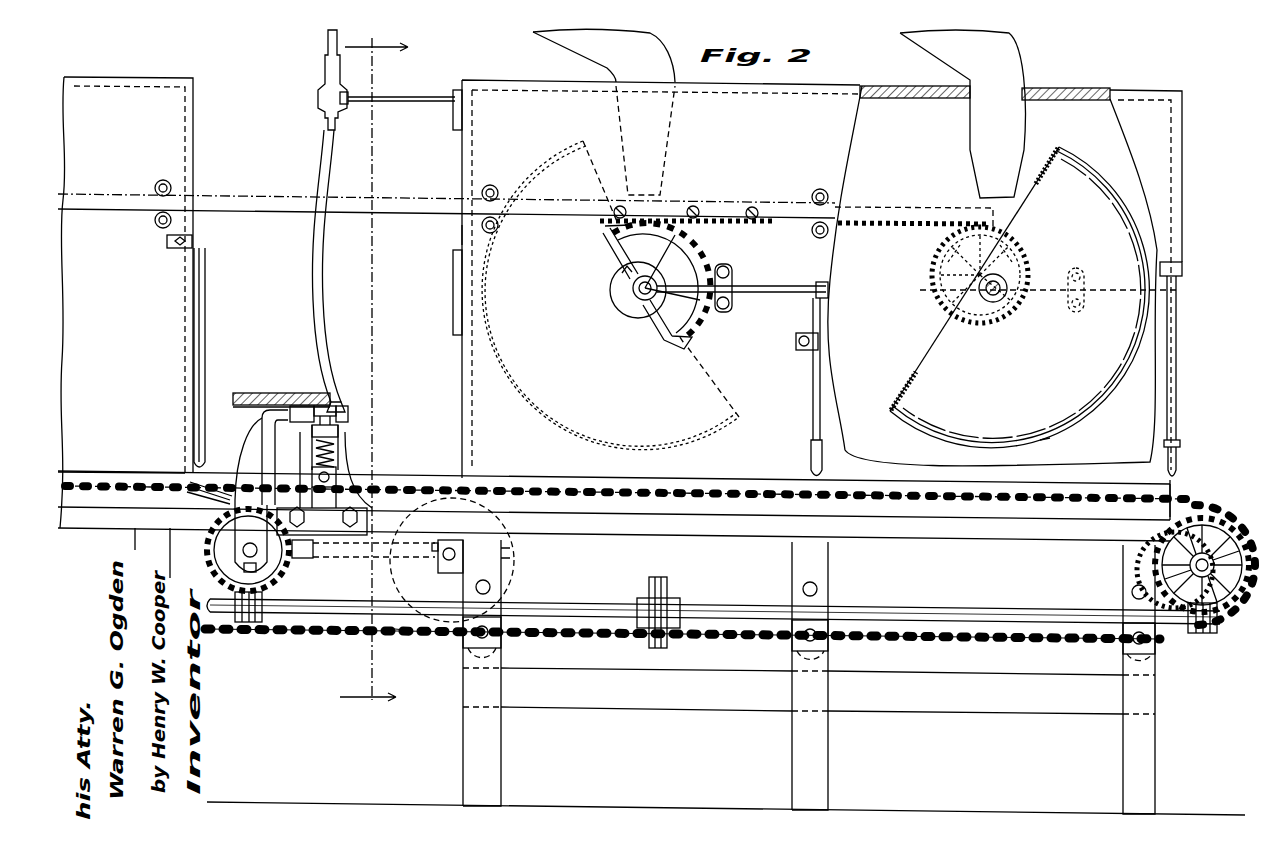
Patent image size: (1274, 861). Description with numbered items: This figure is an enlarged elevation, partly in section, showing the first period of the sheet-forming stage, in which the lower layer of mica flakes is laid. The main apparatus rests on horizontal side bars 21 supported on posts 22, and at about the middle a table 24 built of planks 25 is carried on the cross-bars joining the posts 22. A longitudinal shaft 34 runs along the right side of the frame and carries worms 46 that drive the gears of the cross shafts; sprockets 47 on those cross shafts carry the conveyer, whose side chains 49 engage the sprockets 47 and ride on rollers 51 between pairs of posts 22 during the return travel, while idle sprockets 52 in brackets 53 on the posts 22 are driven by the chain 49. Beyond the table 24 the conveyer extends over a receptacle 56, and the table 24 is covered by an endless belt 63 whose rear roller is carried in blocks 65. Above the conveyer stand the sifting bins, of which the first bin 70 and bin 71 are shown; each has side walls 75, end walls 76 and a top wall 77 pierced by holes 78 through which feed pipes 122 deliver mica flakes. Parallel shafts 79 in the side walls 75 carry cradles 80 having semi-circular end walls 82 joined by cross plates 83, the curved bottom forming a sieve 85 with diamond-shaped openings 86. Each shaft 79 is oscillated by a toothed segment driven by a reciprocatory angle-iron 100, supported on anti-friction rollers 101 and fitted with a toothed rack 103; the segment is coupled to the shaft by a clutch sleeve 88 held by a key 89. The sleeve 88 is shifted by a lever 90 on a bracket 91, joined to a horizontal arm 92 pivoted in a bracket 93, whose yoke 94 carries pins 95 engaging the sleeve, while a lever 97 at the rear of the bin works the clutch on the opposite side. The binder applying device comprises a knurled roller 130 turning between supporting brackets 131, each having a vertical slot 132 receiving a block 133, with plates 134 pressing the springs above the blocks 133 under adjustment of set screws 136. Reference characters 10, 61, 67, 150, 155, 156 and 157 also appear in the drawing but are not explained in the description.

The section line 10 is at (373, 375).
The horizontal side bars 21 is at (897, 544).
The posts 22 is at (492, 790).
The table 24 is at (624, 493).
The planks 25 is at (206, 495).
The shaft 34 is at (1004, 607).
The worms 46 is at (266, 603).
The sprockets 47 is at (1200, 516).
The side chains 49 is at (1173, 500).
The rollers 51 is at (503, 658).
The idle sprockets 52 is at (1162, 562).
The brackets 53 is at (1216, 620).
The receptacle 56 is at (953, 673).
The bearing bracket 61 is at (431, 558).
The endless belt 63 is at (400, 632).
The blocks 65 is at (476, 563).
The sector gear 67 is at (665, 336).
The first bin 70 is at (532, 110).
The sifting bin 71 is at (193, 107).
The side walls 75 is at (610, 305).
The end walls 76 is at (458, 236).
The top wall 77 is at (901, 87).
The holes 78 is at (678, 85).
The parallel shafts 79 is at (976, 289).
The cradles 80 is at (930, 343).
The semi-circular end walls 82 is at (1019, 297).
The cross plates 83 is at (1046, 172).
The sieve 85 is at (975, 444).
The diamond-shaped openings 86 is at (1050, 442).
The clutch sleeve 88 is at (628, 300).
The key 89 is at (632, 292).
The lever 90 is at (804, 382).
The bracket 91 is at (795, 345).
The horizontal arm 92 is at (795, 278).
The bracket 93 is at (732, 268).
The yoke 94 is at (660, 284).
The pins 95 is at (618, 262).
The levers 97 is at (1186, 383).
The reciprocatory angle-irons 100 is at (252, 200).
The anti-friction rollers 101 is at (156, 214).
The toothed rack 103 is at (895, 232).
The feed pipes 122 is at (560, 44).
The knurled roller 130 is at (360, 520).
The supporting brackets 131 is at (292, 440).
The vertical slot 132 is at (342, 442).
The block 133 is at (350, 470).
The plates 134 is at (345, 428).
The set screws 136 is at (348, 416).
The table 150 is at (310, 394).
The spring 155 is at (338, 456).
The valve and hose 156 is at (338, 400).
The clamp block 157 is at (350, 404).